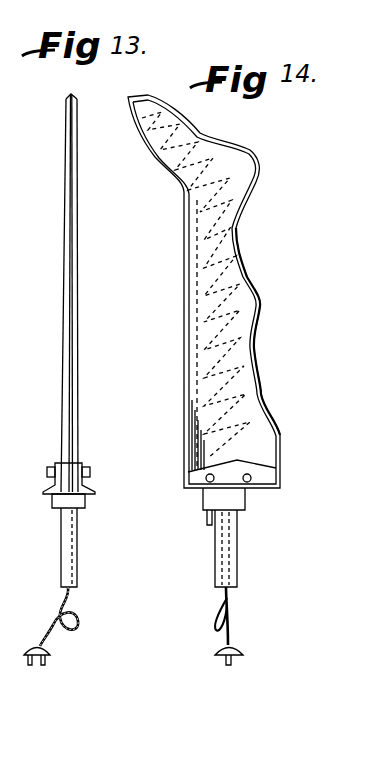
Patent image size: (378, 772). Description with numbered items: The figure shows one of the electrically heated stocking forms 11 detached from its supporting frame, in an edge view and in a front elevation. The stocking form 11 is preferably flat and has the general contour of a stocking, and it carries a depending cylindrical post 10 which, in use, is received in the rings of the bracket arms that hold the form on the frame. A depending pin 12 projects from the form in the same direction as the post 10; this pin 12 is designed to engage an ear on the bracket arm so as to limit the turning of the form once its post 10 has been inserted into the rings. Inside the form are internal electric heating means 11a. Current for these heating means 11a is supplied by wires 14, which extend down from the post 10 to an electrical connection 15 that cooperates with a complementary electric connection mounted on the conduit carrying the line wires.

In FIG. 13, the post 10 is at (76, 549).
In FIG. 14, the post 10 is at (237, 553).
In FIG. 13, the stocking form 11 is at (76, 318).
In FIG. 14, the stocking form 11 is at (251, 302).
In FIG. 14, the internal electric heating means 11a is at (256, 350).
In FIG. 14, the pin 12 is at (206, 518).
In FIG. 13, the wires 14 is at (72, 615).
In FIG. 14, the wires 14 is at (232, 622).
In FIG. 13, the electrical connection 15 is at (52, 652).
In FIG. 14, the electrical connection 15 is at (243, 652).